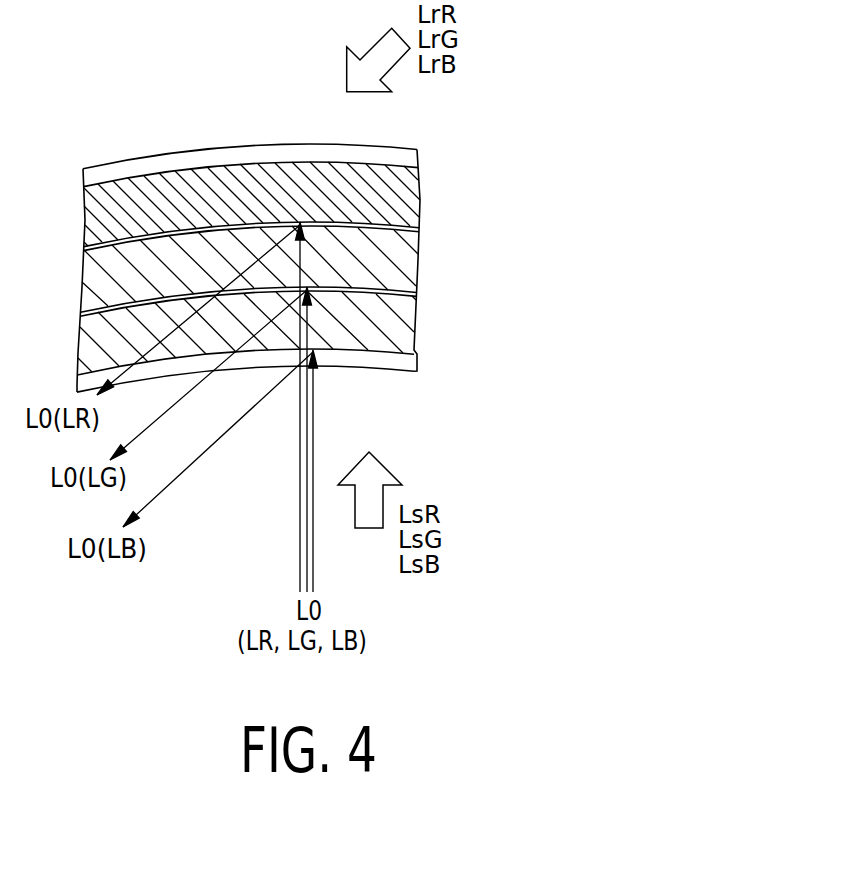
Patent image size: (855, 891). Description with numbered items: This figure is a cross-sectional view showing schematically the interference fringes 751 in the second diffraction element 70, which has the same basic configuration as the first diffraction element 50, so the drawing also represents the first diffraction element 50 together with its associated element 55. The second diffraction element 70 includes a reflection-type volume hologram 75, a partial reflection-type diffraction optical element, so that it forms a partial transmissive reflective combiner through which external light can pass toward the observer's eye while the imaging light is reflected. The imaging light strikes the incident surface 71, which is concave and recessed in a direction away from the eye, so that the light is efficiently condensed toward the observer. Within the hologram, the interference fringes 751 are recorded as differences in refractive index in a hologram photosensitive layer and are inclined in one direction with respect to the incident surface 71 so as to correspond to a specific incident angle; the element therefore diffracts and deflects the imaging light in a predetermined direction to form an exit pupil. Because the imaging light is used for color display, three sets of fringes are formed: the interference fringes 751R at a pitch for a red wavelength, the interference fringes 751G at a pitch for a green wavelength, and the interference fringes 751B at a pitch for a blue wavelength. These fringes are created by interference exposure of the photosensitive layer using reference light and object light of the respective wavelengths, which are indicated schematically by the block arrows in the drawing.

The second diffraction element 70 is at (325, 136).
The reflection-type volume hologram 75 is at (325, 136).
The first diffraction element 50 is at (325, 136).
The filter 55 is at (402, 148).
The interference fringes 751 is at (334, 268).
The interference fringes for red light 751R is at (422, 200).
The interference fringes for green light 751G is at (413, 258).
The interference fringes for blue light 751B is at (297, 333).
The incident surface 71 is at (395, 371).